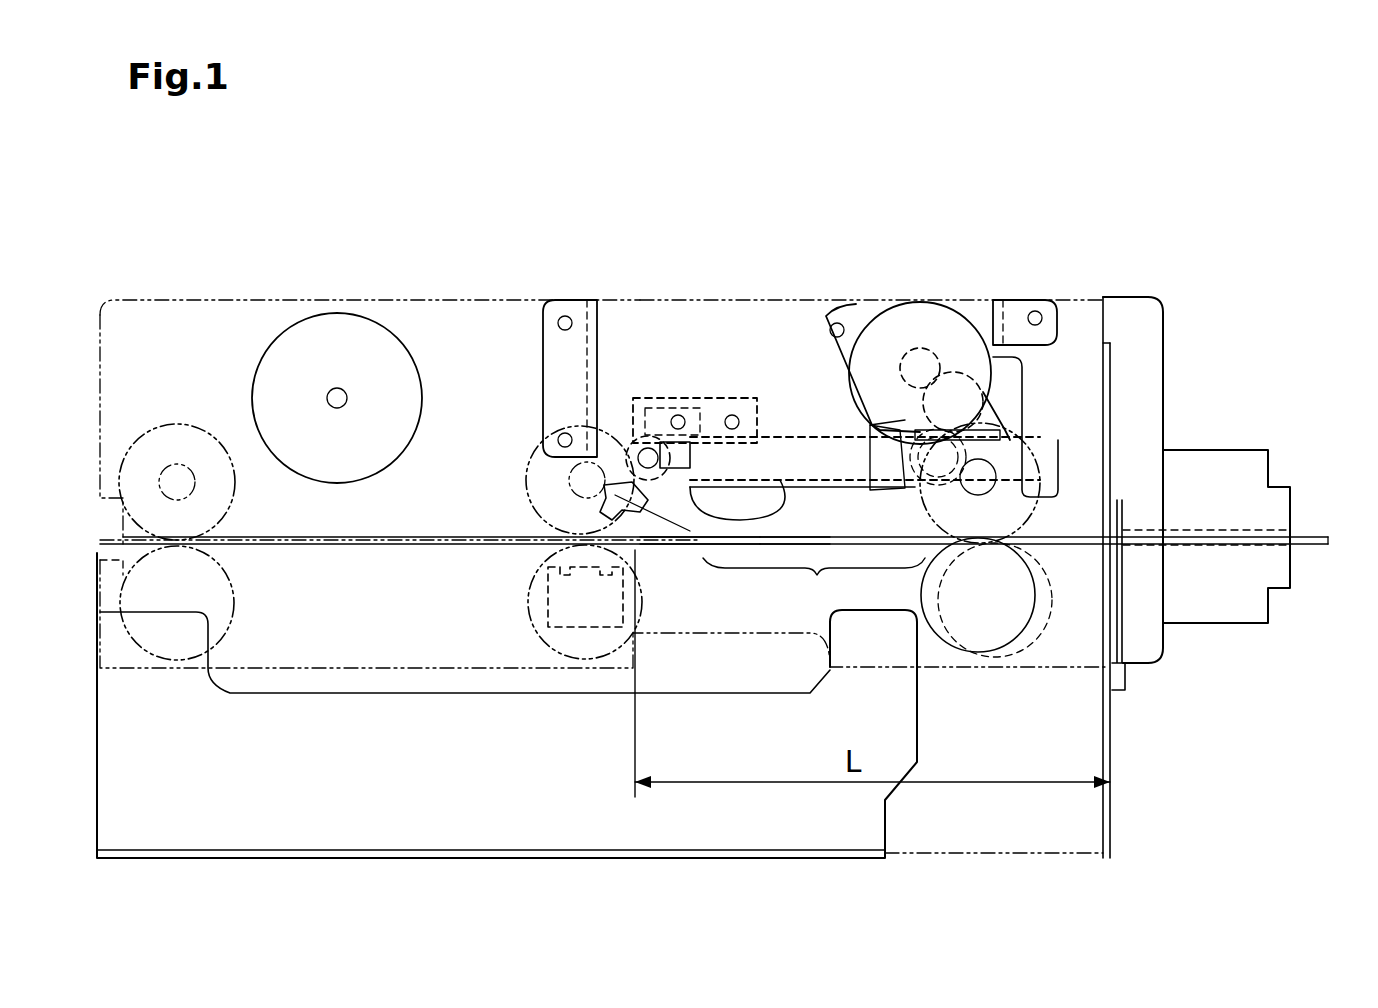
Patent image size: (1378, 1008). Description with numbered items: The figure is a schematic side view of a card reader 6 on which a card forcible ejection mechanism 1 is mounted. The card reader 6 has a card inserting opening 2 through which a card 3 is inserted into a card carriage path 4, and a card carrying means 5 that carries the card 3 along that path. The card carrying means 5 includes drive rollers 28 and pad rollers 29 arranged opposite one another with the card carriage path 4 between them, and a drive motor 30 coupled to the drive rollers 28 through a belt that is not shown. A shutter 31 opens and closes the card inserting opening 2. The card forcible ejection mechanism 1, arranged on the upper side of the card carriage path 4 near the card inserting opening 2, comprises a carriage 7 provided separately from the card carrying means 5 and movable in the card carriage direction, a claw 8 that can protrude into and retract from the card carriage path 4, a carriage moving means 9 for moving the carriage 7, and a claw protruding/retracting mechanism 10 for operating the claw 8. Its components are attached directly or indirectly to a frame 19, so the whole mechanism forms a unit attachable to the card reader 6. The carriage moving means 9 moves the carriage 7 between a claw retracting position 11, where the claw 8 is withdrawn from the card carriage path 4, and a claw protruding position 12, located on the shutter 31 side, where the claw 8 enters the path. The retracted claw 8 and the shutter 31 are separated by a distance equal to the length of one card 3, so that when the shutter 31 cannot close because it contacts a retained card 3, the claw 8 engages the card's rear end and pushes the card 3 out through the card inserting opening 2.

The card forcible ejection mechanism 1 is at (713, 292).
The card inserting opening 2 is at (1297, 532).
The card 3 is at (1318, 536).
The card carriage path 4 is at (472, 535).
The card carrying means 5 is at (165, 340).
The card reader 6 is at (1191, 282).
The carriage 7 is at (767, 505).
The claw 8 is at (612, 505).
The carriage moving means 9 is at (930, 283).
The claw protruding/retracting mechanism 10 is at (647, 390).
The claw retracting position 11 is at (685, 547).
The claw protruding position 12 is at (817, 576).
The frame 19 is at (738, 318).
The drive rollers 28 is at (205, 450).
The pad rollers 29 is at (215, 652).
The drive motor 30 is at (315, 340).
The shutter 31 is at (1125, 605).